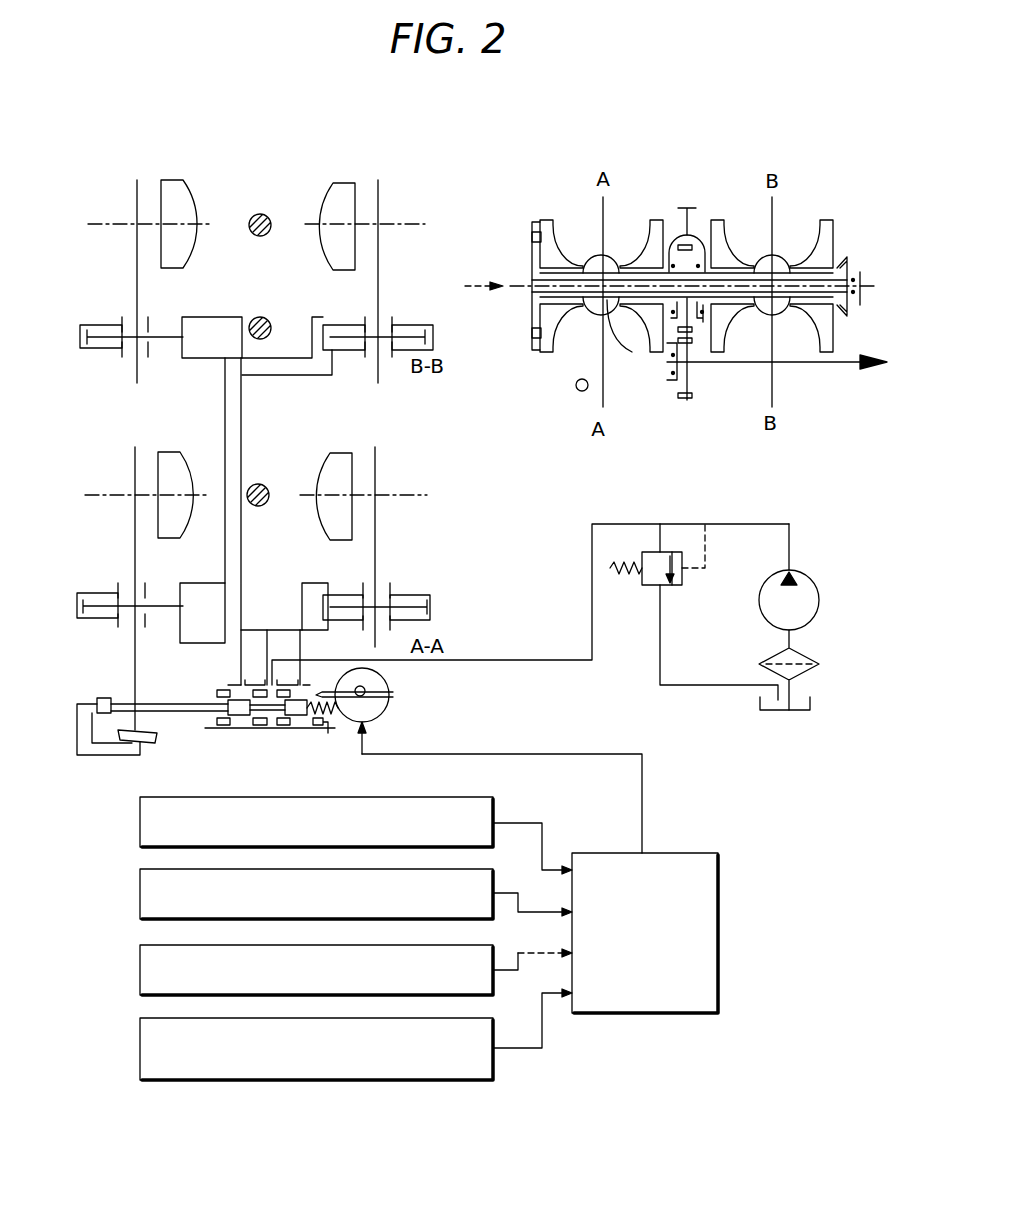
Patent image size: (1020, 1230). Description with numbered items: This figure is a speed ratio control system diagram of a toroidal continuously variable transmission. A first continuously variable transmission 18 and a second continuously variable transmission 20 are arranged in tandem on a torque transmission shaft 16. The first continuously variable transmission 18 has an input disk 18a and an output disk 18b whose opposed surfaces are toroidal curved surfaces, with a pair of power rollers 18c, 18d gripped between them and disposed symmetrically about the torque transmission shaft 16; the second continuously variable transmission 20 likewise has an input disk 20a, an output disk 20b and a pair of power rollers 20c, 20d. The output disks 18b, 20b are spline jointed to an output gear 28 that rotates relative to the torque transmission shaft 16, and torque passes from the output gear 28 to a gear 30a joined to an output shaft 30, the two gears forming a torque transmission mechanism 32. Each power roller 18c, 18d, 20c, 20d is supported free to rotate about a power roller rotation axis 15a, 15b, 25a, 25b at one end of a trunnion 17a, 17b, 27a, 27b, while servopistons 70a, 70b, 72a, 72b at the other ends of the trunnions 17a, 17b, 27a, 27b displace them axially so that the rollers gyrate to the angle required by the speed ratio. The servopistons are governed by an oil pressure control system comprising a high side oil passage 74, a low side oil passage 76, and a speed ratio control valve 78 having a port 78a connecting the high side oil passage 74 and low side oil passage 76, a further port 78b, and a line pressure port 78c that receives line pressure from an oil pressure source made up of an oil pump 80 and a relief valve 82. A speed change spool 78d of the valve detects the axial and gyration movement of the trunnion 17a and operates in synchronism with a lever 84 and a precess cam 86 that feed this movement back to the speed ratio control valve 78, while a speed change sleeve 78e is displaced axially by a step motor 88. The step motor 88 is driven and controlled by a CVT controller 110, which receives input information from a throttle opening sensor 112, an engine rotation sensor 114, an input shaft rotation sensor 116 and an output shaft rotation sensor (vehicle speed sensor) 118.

The power roller rotation axis 15a is at (96, 493).
The power roller rotation axis 15b is at (411, 493).
The torque transmission shaft 16 is at (268, 216).
The trunnion 17a is at (133, 527).
The trunnion 17b is at (377, 526).
The first continuously variable transmission 18 is at (591, 218).
The input disk 18a is at (545, 220).
The output disk 18b is at (655, 220).
The power roller 18c is at (183, 452).
The power roller 18d is at (337, 453).
The second continuously variable transmission 20 is at (792, 226).
The input disk 20a is at (830, 220).
The output disk 20b is at (726, 220).
The power roller 20c is at (196, 180).
The power roller 20d is at (340, 183).
The power roller rotation axis 25a is at (97, 222).
The power roller rotation axis 25b is at (411, 222).
The trunnion 27a is at (136, 262).
The trunnion 27b is at (380, 262).
The output gear 28 is at (690, 235).
The output shaft 30 is at (269, 319).
The gear 30a is at (685, 400).
The torque transmission mechanism 32 is at (712, 385).
The servopiston 70a is at (93, 594).
The servopiston 70b is at (426, 598).
The servopiston 72a is at (99, 323).
The servopiston 72b is at (418, 325).
The high side oil passage 74 is at (242, 530).
The low side oil passage 76 is at (180, 635).
The speed ratio control valve 78 is at (286, 739).
The port 78a is at (232, 682).
The valve port 78b is at (302, 668).
The line pressure port 78c is at (268, 650).
The speed change spool 78d is at (244, 714).
The speed change sleeve 78e is at (324, 726).
The oil pump 80 is at (812, 580).
The relief valve 82 is at (683, 580).
The lever 84 is at (81, 791).
The precess cam 86 is at (157, 736).
The step motor 88 is at (392, 692).
The CVT controller 110 is at (719, 923).
The throttle opening sensor 112 is at (140, 825).
The engine rotation sensor 114 is at (140, 897).
The input shaft rotation sensor 116 is at (140, 972).
The output shaft rotation sensor (vehicle speed sensor) 118 is at (140, 1054).